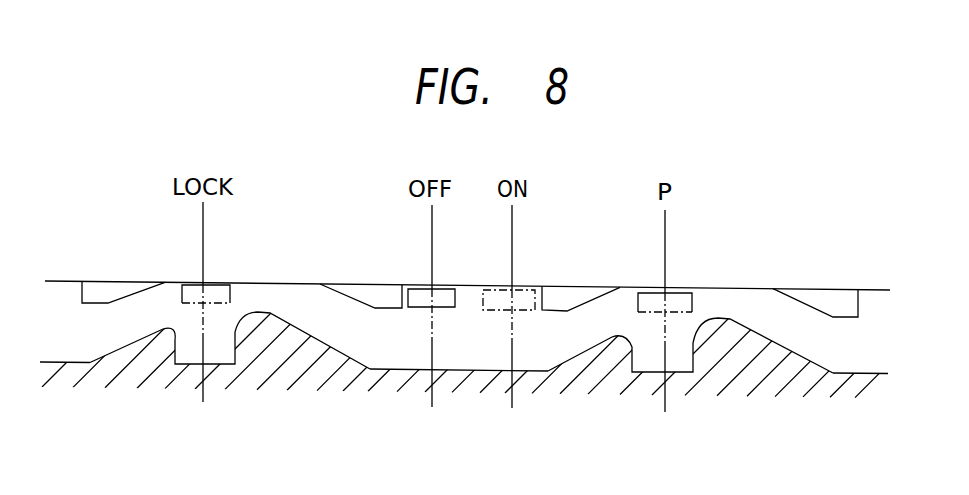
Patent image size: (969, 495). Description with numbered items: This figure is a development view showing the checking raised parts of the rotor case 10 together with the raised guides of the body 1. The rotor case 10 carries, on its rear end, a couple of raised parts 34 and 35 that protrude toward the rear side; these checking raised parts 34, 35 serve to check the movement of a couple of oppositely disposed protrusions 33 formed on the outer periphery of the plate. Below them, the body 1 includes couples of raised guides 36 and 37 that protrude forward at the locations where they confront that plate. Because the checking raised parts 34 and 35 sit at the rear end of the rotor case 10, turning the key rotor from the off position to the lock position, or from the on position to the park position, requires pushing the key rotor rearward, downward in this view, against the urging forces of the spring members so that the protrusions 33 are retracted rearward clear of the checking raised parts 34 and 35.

The body 1 is at (337, 382).
The rotor case 10 is at (742, 267).
The protrusions 33 is at (218, 288).
The checking raised part 34 is at (363, 292).
The checking raised part 35 is at (108, 288).
The raised guide 36 is at (258, 340).
The raised guide 37 is at (157, 350).